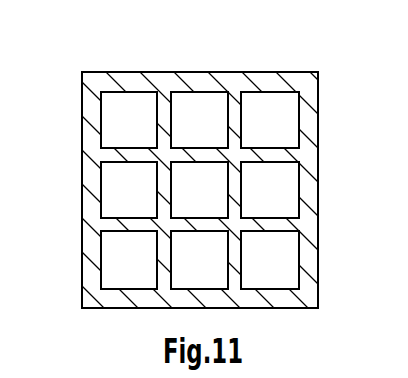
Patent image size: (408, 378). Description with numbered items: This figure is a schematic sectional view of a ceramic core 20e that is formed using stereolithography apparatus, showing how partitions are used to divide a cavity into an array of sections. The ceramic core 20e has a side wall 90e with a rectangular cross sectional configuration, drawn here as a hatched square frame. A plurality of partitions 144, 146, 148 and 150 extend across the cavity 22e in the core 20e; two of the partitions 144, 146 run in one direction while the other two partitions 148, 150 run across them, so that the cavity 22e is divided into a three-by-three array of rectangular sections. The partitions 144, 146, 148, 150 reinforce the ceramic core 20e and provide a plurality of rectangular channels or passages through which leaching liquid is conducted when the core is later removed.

The ceramic core 20e is at (322, 126).
The cavity 22e is at (290, 192).
The side wall 90e is at (310, 263).
The partition 144 is at (166, 112).
The partition 146 is at (238, 113).
The partition 148 is at (120, 157).
The partition 150 is at (104, 231).